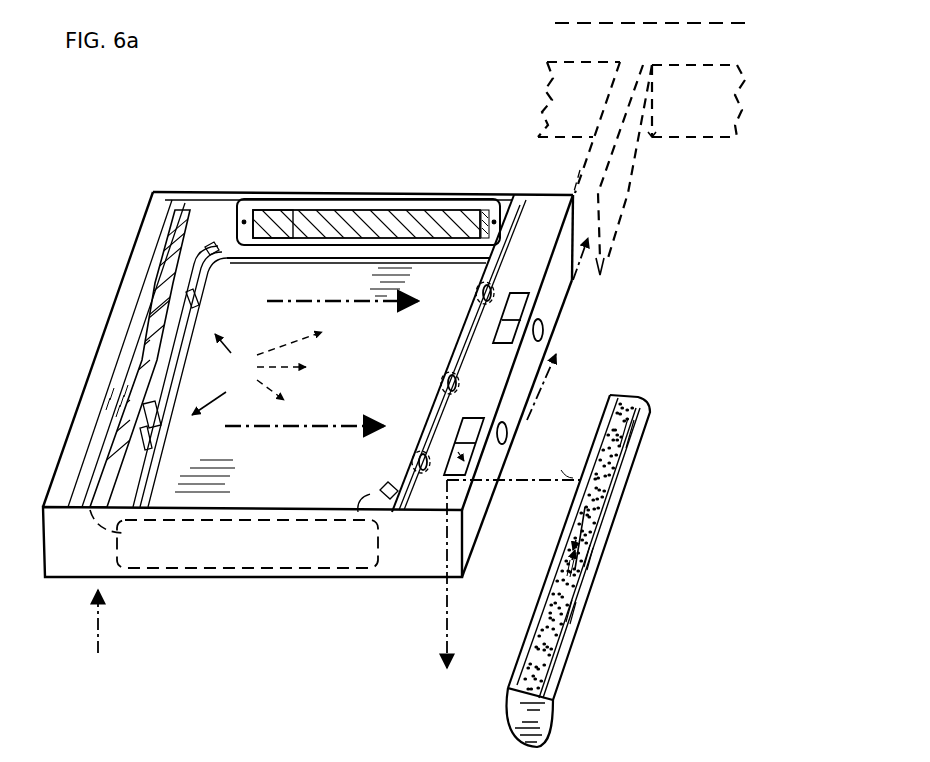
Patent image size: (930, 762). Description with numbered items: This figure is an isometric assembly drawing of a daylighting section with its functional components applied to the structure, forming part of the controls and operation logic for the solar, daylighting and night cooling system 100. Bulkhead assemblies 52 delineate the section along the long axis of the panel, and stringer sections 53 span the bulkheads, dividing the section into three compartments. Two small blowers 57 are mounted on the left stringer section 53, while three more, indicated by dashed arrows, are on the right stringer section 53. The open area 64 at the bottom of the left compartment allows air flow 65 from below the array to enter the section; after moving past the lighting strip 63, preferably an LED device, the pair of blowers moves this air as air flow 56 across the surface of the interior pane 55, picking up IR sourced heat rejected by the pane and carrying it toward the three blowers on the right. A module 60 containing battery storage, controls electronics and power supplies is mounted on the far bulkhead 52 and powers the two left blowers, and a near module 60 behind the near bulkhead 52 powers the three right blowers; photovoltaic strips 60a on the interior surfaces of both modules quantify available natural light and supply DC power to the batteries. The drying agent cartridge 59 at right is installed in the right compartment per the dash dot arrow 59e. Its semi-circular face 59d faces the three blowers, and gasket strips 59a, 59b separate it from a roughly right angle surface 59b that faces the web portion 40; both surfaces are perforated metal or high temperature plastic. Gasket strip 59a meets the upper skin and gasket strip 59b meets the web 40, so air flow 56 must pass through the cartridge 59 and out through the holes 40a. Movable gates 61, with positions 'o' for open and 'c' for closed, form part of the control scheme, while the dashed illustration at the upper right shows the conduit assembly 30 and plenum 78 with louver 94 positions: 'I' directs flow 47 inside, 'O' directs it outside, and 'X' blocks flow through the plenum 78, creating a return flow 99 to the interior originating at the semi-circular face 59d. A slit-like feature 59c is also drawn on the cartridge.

The solar, daylighting and night cooling system 100 is at (294, 84).
The open area at bottom of left compartment 64 is at (188, 262).
The lighting strip 63 is at (168, 265).
The module 60 is at (394, 215).
The photovoltaic strip 60a is at (282, 222).
The stringer section 53 is at (500, 240).
The louver 94 is at (618, 40).
The plenum 78 is at (560, 106).
The conduit assembly 30 is at (590, 215).
The movable gate 61 is at (513, 300).
The air flow 56 is at (321, 378).
The blower 57 is at (257, 373).
The interior pane 55 is at (396, 383).
The hole 40a is at (545, 333).
The air flow 47 is at (557, 331).
The web portion 40 is at (475, 520).
The bulkhead assembly 52 is at (411, 555).
The air flow 65 is at (93, 641).
The return flow 99 is at (446, 591).
The dash dot arrow 59e is at (513, 495).
The drying agent cartridge 59 is at (540, 718).
The gasket strip 59a is at (522, 658).
The gasket strip 59b is at (608, 568).
The slit 59c is at (642, 432).
The semi-circular face 59d is at (512, 730).